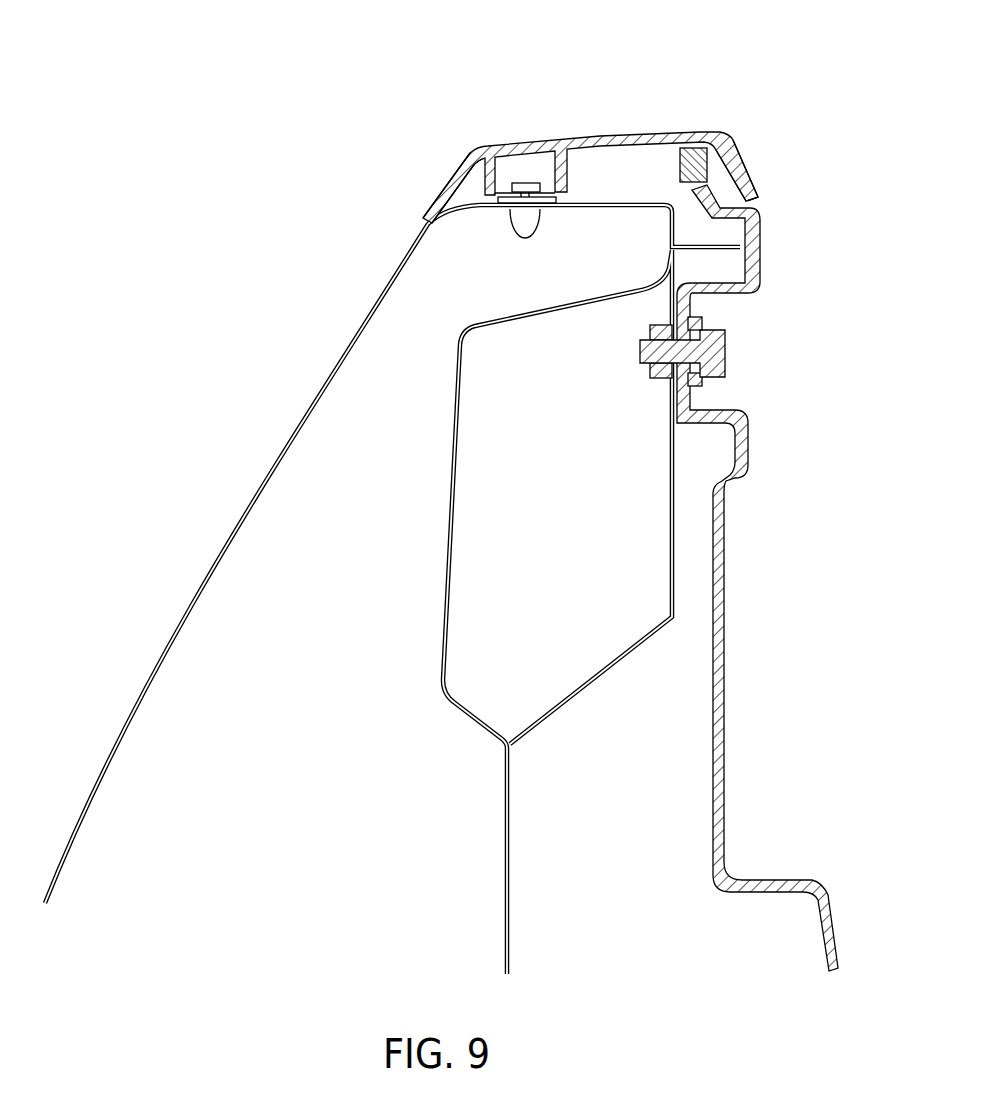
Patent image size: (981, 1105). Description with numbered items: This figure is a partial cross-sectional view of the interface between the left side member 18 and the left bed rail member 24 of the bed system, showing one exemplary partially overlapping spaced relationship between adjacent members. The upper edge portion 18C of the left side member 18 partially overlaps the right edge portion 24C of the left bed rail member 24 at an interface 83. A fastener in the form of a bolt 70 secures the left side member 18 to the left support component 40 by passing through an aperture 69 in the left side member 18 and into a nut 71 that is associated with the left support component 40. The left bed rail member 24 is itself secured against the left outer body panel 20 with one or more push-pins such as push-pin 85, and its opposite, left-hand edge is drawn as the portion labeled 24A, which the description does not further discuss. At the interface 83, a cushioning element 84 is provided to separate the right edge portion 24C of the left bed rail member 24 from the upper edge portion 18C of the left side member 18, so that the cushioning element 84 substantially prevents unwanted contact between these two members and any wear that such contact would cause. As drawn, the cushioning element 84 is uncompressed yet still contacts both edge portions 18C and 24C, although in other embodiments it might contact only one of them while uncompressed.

The left side member 18 is at (750, 706).
The upper edge portion 18C is at (692, 219).
The left outer body panel 20 is at (250, 450).
The left bed rail member 24 is at (587, 113).
The first leg of molding 24A is at (424, 190).
The right edge portion 24C is at (758, 165).
The left support component 40 is at (612, 706).
The aperture 69 is at (688, 318).
The bolt 70 is at (727, 357).
The nut 71 is at (660, 384).
The interface 83 is at (768, 210).
The cushioning element 84 is at (680, 163).
The push-pin 85 is at (527, 239).